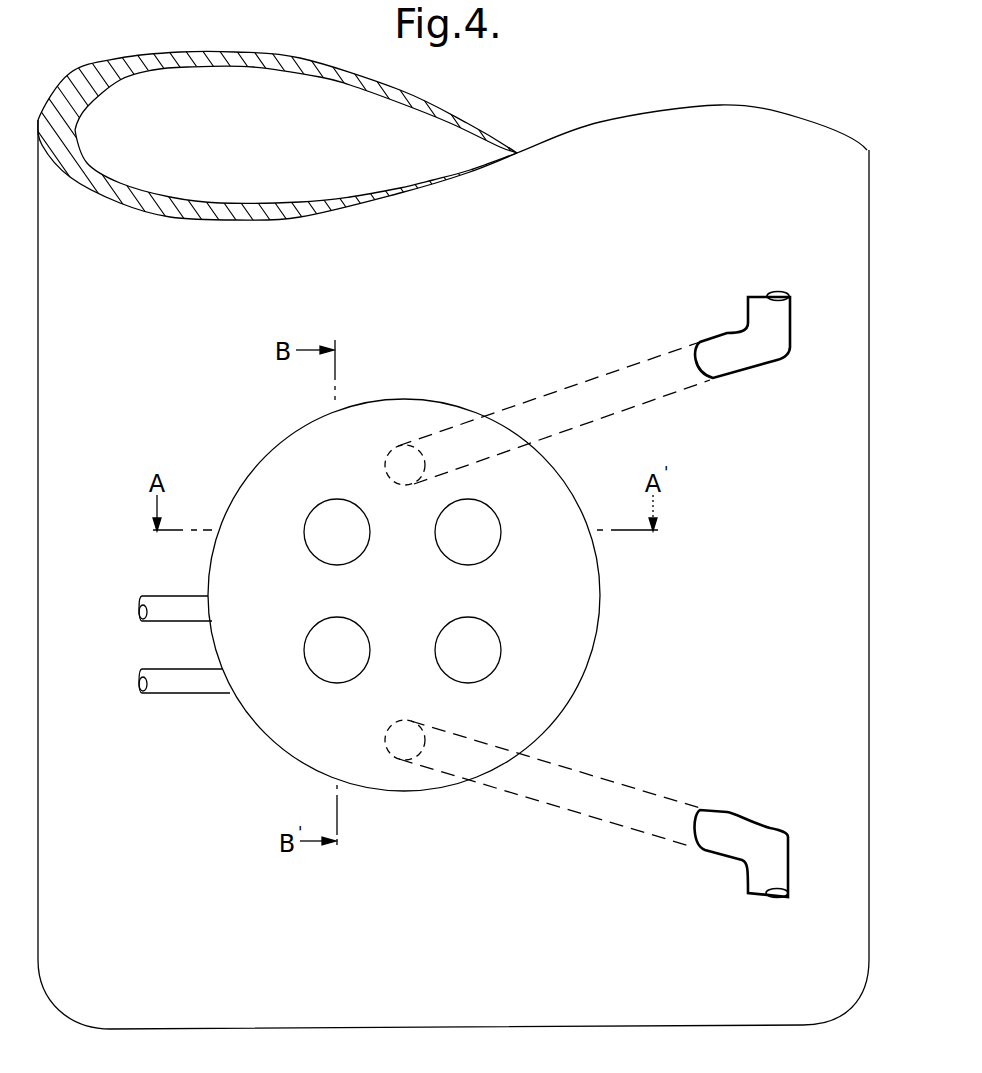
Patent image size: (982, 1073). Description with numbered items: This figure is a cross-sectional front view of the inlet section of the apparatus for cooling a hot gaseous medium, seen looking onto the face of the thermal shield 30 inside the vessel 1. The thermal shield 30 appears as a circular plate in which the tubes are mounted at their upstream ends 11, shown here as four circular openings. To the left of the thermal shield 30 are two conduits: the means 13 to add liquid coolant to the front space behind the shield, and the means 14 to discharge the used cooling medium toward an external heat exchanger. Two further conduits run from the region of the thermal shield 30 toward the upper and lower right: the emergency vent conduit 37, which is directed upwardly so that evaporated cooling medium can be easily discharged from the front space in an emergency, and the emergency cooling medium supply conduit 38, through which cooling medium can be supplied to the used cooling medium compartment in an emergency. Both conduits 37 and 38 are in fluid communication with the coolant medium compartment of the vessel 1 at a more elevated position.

The vessel 1 is at (869, 897).
The upstream end 11 is at (314, 556).
The means to add liquid coolant 13 is at (160, 694).
The means to discharge cooling medium 14 is at (157, 622).
The thermal shield 30 is at (282, 750).
The emergency vent conduit 37 is at (603, 373).
The emergency cooling medium supply conduit 38 is at (585, 815).